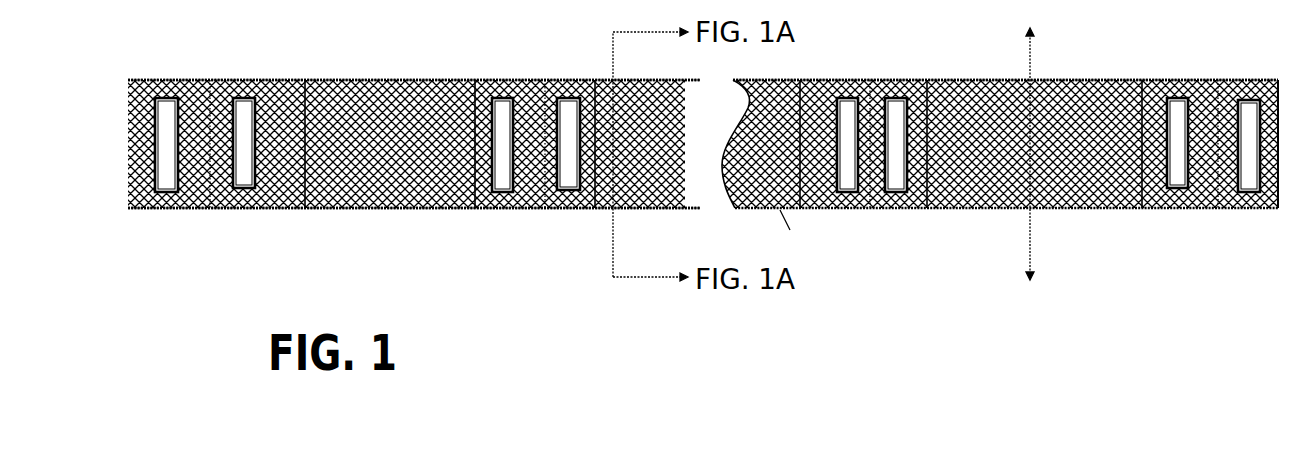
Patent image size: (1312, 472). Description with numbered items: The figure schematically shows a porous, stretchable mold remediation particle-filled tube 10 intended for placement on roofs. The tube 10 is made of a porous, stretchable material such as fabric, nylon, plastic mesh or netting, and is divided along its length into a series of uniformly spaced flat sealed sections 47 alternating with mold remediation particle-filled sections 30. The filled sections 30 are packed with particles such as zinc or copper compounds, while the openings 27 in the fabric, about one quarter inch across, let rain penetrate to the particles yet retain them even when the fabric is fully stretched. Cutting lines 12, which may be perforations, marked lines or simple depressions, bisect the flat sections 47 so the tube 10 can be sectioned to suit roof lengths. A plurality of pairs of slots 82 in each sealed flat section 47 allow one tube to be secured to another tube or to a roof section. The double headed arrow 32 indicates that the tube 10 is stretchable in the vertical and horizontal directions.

The porous, stretchable mold remediation particle-filled tube 10 is at (704, 174).
The cutting lines 12 is at (215, 203).
The openings 27 is at (760, 208).
The mold remediation particle-filled sections 30 is at (357, 205).
The double headed arrow 32 is at (1033, 54).
The flat sealed sections 47 is at (263, 78).
The slots 82 is at (155, 194).